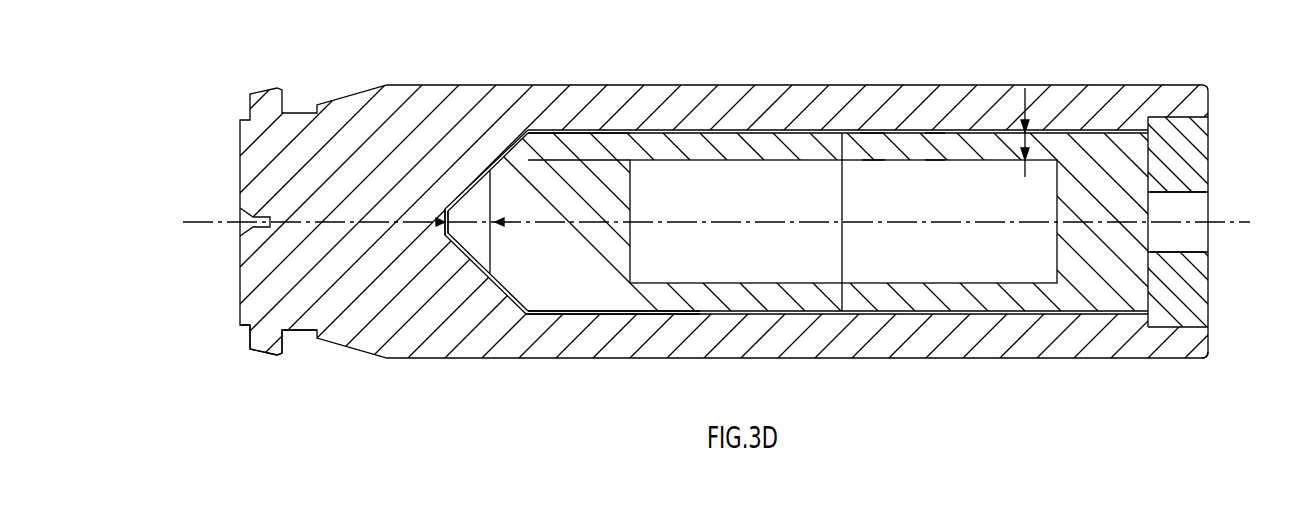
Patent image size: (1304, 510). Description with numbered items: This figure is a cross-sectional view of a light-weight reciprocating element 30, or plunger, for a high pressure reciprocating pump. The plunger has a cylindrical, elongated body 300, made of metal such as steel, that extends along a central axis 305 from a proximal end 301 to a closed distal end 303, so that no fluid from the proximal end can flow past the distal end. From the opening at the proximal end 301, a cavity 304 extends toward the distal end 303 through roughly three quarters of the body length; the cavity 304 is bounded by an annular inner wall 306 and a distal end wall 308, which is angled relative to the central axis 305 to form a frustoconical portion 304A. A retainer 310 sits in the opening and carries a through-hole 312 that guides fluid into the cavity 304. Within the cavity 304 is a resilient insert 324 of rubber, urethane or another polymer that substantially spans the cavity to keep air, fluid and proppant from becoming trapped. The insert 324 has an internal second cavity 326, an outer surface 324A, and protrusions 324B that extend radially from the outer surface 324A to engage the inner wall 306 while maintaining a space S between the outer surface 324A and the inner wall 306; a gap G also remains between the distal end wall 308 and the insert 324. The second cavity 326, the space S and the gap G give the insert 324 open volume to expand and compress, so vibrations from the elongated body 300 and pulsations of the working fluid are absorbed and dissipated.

The reciprocating element 30 is at (368, 67).
The elongated body 300 is at (437, 108).
The proximal end 301 is at (1214, 362).
The distal end 303 is at (239, 335).
The cavity 304 is at (773, 127).
The frustoconical portion 304A is at (487, 173).
The central axis 305 is at (192, 221).
The inner wall 306 is at (635, 310).
The distal end wall 308 is at (451, 232).
The retainer 310 is at (1192, 160).
The through-hole 312 is at (1202, 217).
The insert 324 is at (560, 173).
The outer surface 324A is at (873, 134).
The protrusions 324B is at (933, 132).
The second cavity 326 is at (770, 243).
The space S is at (1030, 101).
The gap G is at (480, 212).